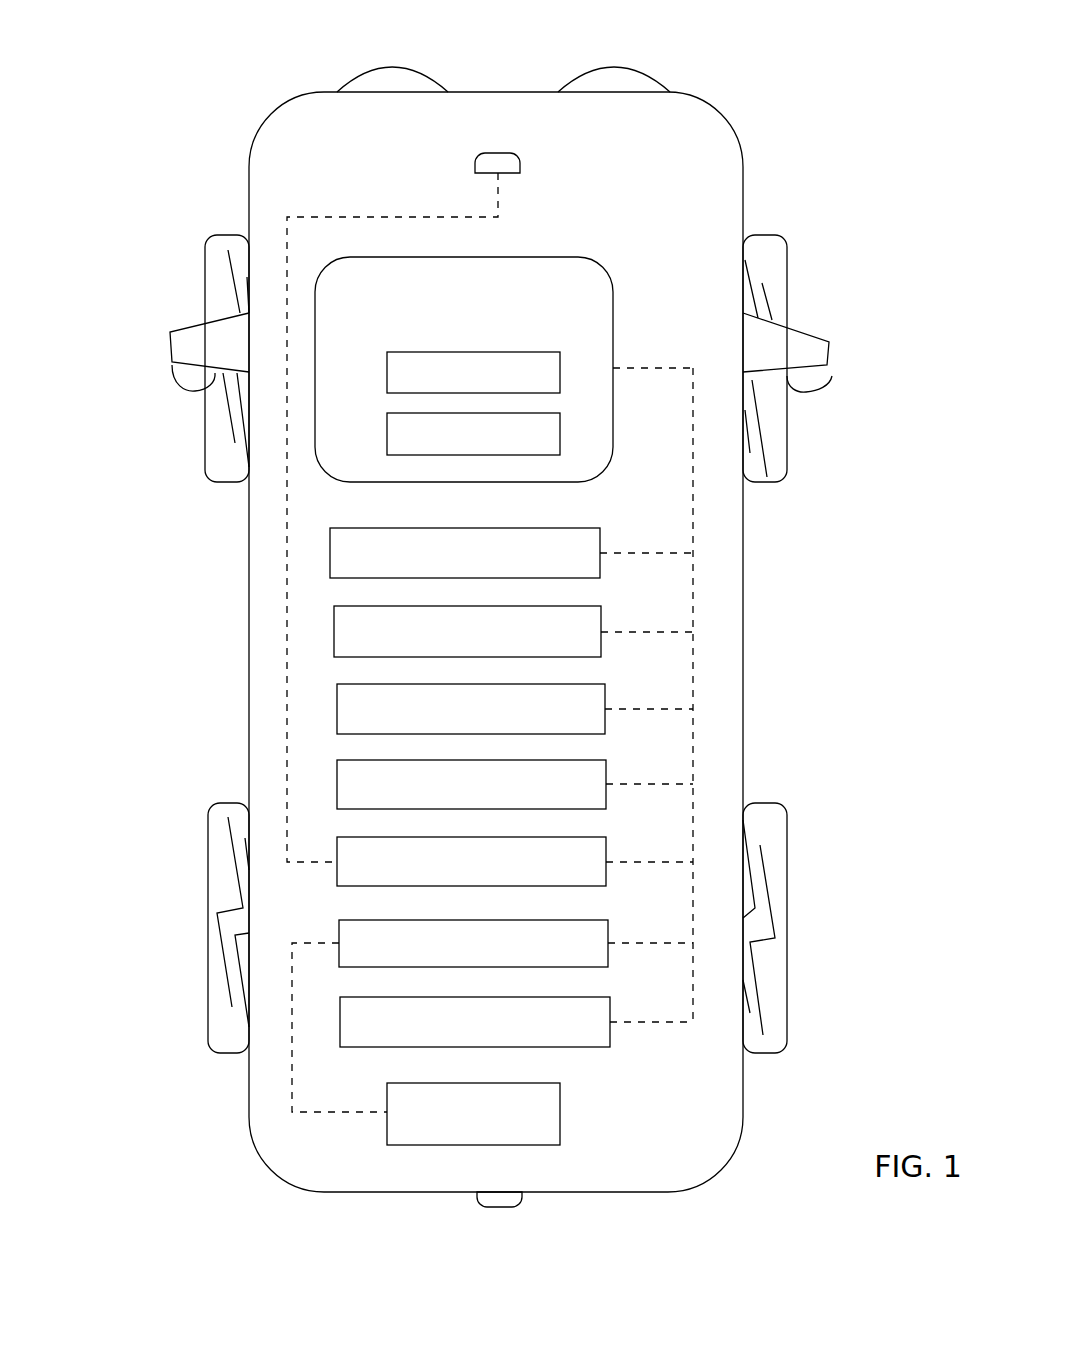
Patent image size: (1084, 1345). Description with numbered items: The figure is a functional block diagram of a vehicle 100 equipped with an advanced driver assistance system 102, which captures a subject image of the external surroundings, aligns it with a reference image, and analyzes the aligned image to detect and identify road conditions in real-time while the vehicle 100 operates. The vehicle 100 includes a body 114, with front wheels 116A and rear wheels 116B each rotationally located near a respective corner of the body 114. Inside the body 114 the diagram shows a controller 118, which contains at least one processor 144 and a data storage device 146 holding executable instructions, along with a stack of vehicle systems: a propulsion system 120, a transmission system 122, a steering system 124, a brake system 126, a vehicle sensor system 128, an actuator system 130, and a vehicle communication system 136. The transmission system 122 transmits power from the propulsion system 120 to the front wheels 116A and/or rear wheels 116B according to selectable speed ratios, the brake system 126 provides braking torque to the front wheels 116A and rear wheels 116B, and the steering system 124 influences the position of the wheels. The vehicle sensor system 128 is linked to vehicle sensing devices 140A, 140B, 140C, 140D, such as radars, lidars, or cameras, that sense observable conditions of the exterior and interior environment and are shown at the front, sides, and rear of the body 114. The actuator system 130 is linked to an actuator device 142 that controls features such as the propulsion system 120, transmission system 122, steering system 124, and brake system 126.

The vehicle 100 is at (802, 157).
The advanced driver assistance system 102 is at (665, 213).
The body 114 is at (250, 158).
The front wheels 116A is at (223, 278).
The rear wheels 116B is at (222, 875).
The controller 118 is at (464, 369).
The propulsion system 120 is at (465, 553).
The transmission system 122 is at (467, 631).
The steering system 124 is at (471, 709).
The brake system 126 is at (471, 784).
The vehicle sensor system 128 is at (471, 861).
The actuator system 130 is at (473, 943).
The vehicle communication system 136 is at (475, 1022).
The vehicle sensing device 140A is at (500, 152).
The vehicle sensing device 140B is at (188, 378).
The vehicle sensing device 140C is at (813, 380).
The vehicle sensing device 140D is at (498, 1202).
The actuator device 142 is at (473, 1114).
The processor 144 is at (473, 372).
The data storage device 146 is at (473, 434).